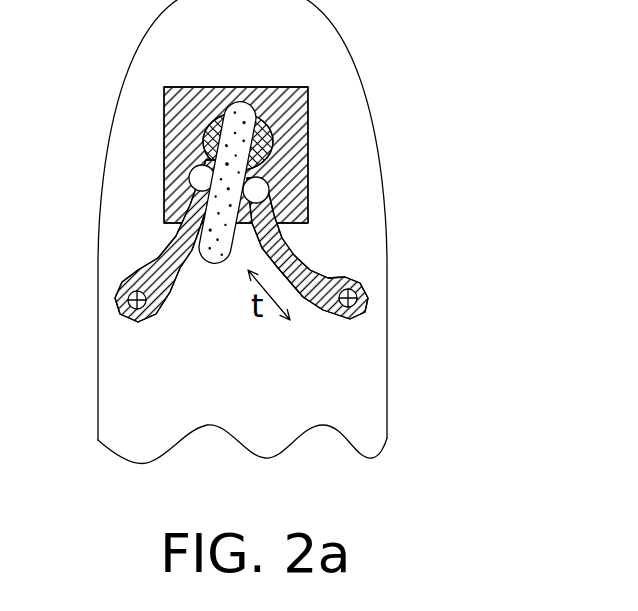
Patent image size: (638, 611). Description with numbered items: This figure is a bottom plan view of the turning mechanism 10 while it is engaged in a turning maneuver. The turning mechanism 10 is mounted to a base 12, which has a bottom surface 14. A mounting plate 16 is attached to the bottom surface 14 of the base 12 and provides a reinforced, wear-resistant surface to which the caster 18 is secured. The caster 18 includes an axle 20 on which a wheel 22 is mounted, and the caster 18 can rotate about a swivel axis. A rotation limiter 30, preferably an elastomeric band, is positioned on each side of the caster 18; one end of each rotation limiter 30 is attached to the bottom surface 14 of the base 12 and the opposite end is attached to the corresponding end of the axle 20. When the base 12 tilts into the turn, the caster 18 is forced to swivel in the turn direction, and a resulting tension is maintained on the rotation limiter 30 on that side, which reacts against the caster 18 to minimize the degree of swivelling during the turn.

The turning mechanism 10 is at (289, 231).
The base 12 is at (388, 338).
The bottom surface 14 is at (253, 407).
The mounting plate 16 is at (178, 87).
The caster 18 is at (266, 128).
The axle 20 is at (228, 180).
The wheel 22 is at (252, 103).
The rotation limiter 30 is at (147, 263).